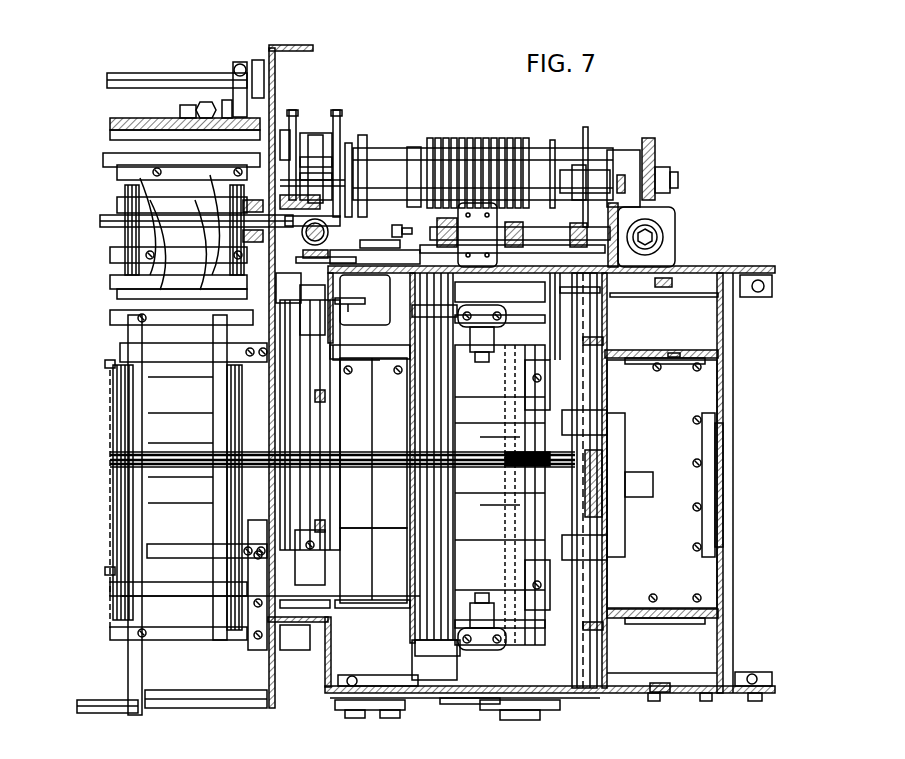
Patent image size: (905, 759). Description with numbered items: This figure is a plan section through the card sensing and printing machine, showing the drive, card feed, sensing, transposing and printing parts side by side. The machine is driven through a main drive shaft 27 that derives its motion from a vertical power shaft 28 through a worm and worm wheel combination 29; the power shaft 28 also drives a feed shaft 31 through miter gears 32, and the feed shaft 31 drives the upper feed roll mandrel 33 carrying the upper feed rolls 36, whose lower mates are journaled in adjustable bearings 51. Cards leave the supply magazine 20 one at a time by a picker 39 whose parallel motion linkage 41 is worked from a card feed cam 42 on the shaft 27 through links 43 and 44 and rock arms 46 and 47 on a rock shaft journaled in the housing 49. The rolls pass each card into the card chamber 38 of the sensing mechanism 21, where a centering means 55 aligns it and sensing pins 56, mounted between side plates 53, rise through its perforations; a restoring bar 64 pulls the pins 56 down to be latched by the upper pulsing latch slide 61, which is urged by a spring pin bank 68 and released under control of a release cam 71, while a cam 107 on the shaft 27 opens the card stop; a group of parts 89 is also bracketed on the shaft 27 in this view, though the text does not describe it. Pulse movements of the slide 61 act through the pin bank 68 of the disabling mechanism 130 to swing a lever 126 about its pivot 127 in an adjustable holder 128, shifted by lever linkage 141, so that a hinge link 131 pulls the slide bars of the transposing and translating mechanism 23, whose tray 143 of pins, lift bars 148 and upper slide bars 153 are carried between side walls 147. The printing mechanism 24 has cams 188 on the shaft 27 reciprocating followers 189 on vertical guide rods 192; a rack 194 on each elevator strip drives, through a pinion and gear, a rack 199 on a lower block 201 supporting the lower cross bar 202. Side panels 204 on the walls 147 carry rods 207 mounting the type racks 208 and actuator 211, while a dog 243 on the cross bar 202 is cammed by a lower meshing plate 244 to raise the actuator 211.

The supply magazine 20 is at (662, 484).
The sensing mechanism 21 is at (502, 495).
The transposing and translating mechanism combination 23 is at (112, 520).
The printing mechanism 24 is at (198, 68).
The main drive shaft 27 is at (380, 164).
The vertical power shaft 28 is at (653, 237).
The worm and worm wheel combination 29 is at (656, 156).
The feed shaft 31 is at (418, 222).
The miter gears 32 is at (648, 225).
The upper feed roll mandrel 33 is at (575, 585).
The upper feed rolls 36 is at (590, 410).
The card chamber 38 is at (326, 234).
The picker 39 is at (712, 436).
The parallel motion linkage 41 is at (697, 352).
The card feed cam 42 is at (587, 135).
The link 43 is at (617, 160).
The link 44 is at (632, 348).
The rock arm 46 is at (578, 178).
The rock arm 47 is at (598, 337).
The housing 49 is at (690, 270).
The bearings 51 is at (392, 714).
The side plates 53 is at (410, 540).
The centering means 55 is at (485, 345).
The sensing pins 56 is at (525, 430).
The upper pulsing latch slide 61 is at (393, 475).
The restoring bar 64 is at (440, 597).
The spring urged pin bank 68 is at (350, 475).
The release cam 71 is at (555, 140).
The disc stack 89 is at (526, 127).
The cam 107 is at (420, 148).
The lever 126 is at (322, 390).
The pivot 127 is at (330, 520).
The adjustable holder 128 is at (330, 410).
The disabling mechanism 130 is at (330, 355).
The hinge link 131 is at (330, 456).
The lever linkage 141 is at (356, 302).
The tray 143 is at (100, 650).
The side walls 147 is at (290, 58).
The lift bars 148 is at (192, 455).
The upper slide bars 153 is at (125, 492).
The cams 188 is at (336, 107).
The followers 189 is at (292, 170).
The vertical guide rods 192 is at (330, 285).
The rack 194 is at (316, 149).
The rack 199 is at (268, 204).
The lower block 201 is at (420, 215).
The lower cross bar 202 is at (310, 237).
The side panels 204 is at (270, 60).
The rods 207 is at (140, 78).
The type racks 208 is at (240, 172).
The actuator 211 is at (200, 198).
The dog 243 is at (175, 278).
The lower meshing plate 244 is at (215, 276).